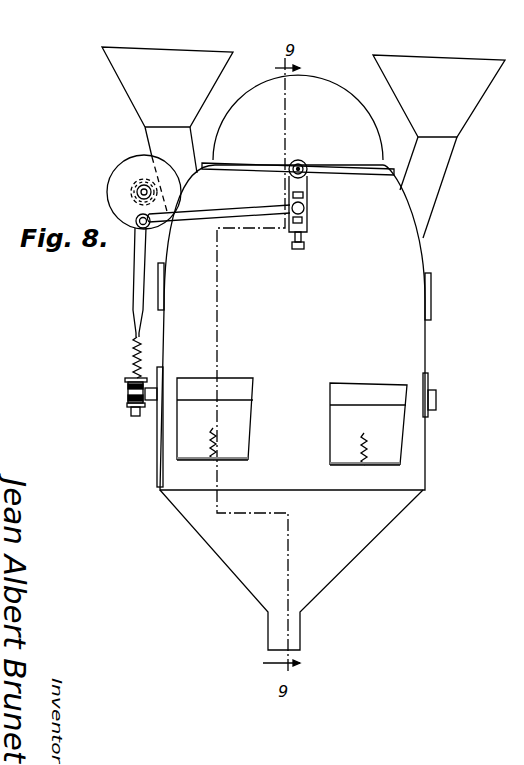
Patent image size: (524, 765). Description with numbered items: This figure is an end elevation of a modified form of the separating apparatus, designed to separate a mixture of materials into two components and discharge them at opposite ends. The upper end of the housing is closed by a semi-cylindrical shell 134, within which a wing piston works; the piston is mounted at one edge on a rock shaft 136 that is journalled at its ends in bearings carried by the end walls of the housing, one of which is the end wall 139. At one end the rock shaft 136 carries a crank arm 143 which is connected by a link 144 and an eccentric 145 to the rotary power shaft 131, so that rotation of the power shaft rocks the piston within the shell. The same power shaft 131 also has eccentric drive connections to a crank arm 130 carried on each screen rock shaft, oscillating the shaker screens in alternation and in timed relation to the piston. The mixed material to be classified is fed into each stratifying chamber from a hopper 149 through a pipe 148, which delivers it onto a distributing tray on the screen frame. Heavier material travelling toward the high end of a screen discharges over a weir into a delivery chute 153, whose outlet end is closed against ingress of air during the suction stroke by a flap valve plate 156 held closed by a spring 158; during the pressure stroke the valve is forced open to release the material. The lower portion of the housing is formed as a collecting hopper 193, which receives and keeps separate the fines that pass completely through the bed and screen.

The crank arm 130 is at (125, 389).
The rotary power shaft 131 is at (138, 188).
The semi-cylindrical shell 134 is at (347, 95).
The rock shaft 136 is at (305, 160).
The end wall 139 is at (272, 104).
The crank arm 143 is at (309, 194).
The link 144 is at (240, 212).
The eccentric 145 is at (139, 227).
The pipe 148 is at (150, 138).
The hopper 149 is at (163, 57).
The delivery chute 153 is at (332, 393).
The flap valve plate 156 is at (333, 468).
The spring 158 is at (363, 447).
The collecting hopper 193 is at (350, 543).